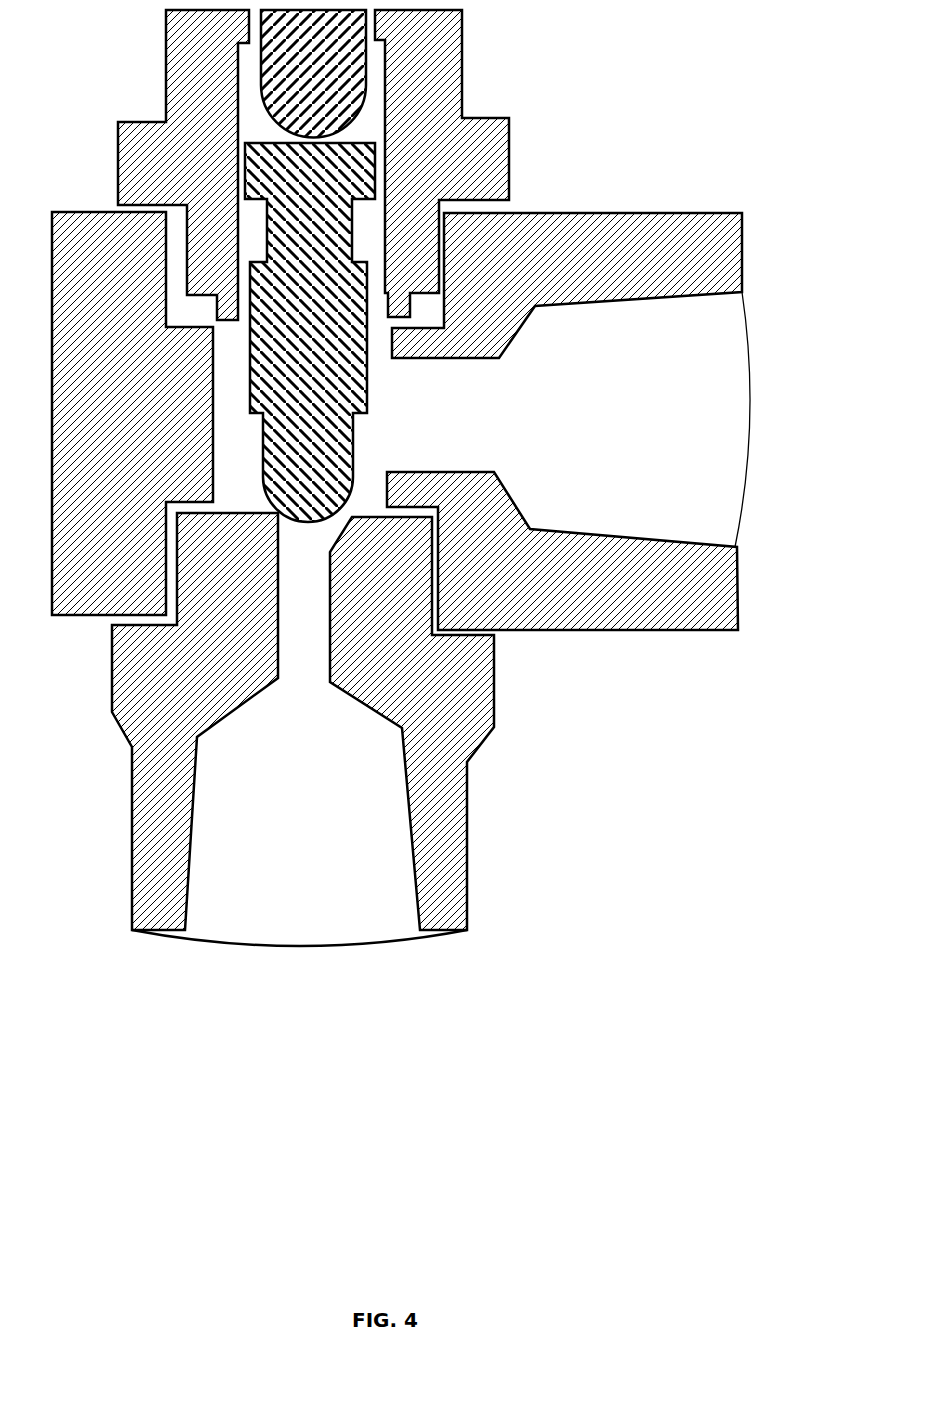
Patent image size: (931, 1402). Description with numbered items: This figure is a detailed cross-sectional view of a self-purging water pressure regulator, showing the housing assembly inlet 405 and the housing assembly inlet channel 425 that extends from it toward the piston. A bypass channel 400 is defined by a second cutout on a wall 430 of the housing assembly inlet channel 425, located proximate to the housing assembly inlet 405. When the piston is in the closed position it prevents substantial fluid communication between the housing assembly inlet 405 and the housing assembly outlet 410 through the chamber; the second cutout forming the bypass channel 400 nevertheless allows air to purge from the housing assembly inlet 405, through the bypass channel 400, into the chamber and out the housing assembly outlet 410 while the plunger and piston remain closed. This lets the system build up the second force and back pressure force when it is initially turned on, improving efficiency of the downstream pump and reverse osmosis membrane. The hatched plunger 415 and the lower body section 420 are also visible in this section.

The bypass channel 400 is at (322, 530).
The housing assembly inlet 405 is at (402, 940).
The housing assembly outlet 410 is at (727, 447).
The plunger 415 is at (247, 159).
The valve body lower section 420 is at (343, 537).
The housing assembly inlet channel 425 is at (304, 665).
The wall 430 is at (350, 520).